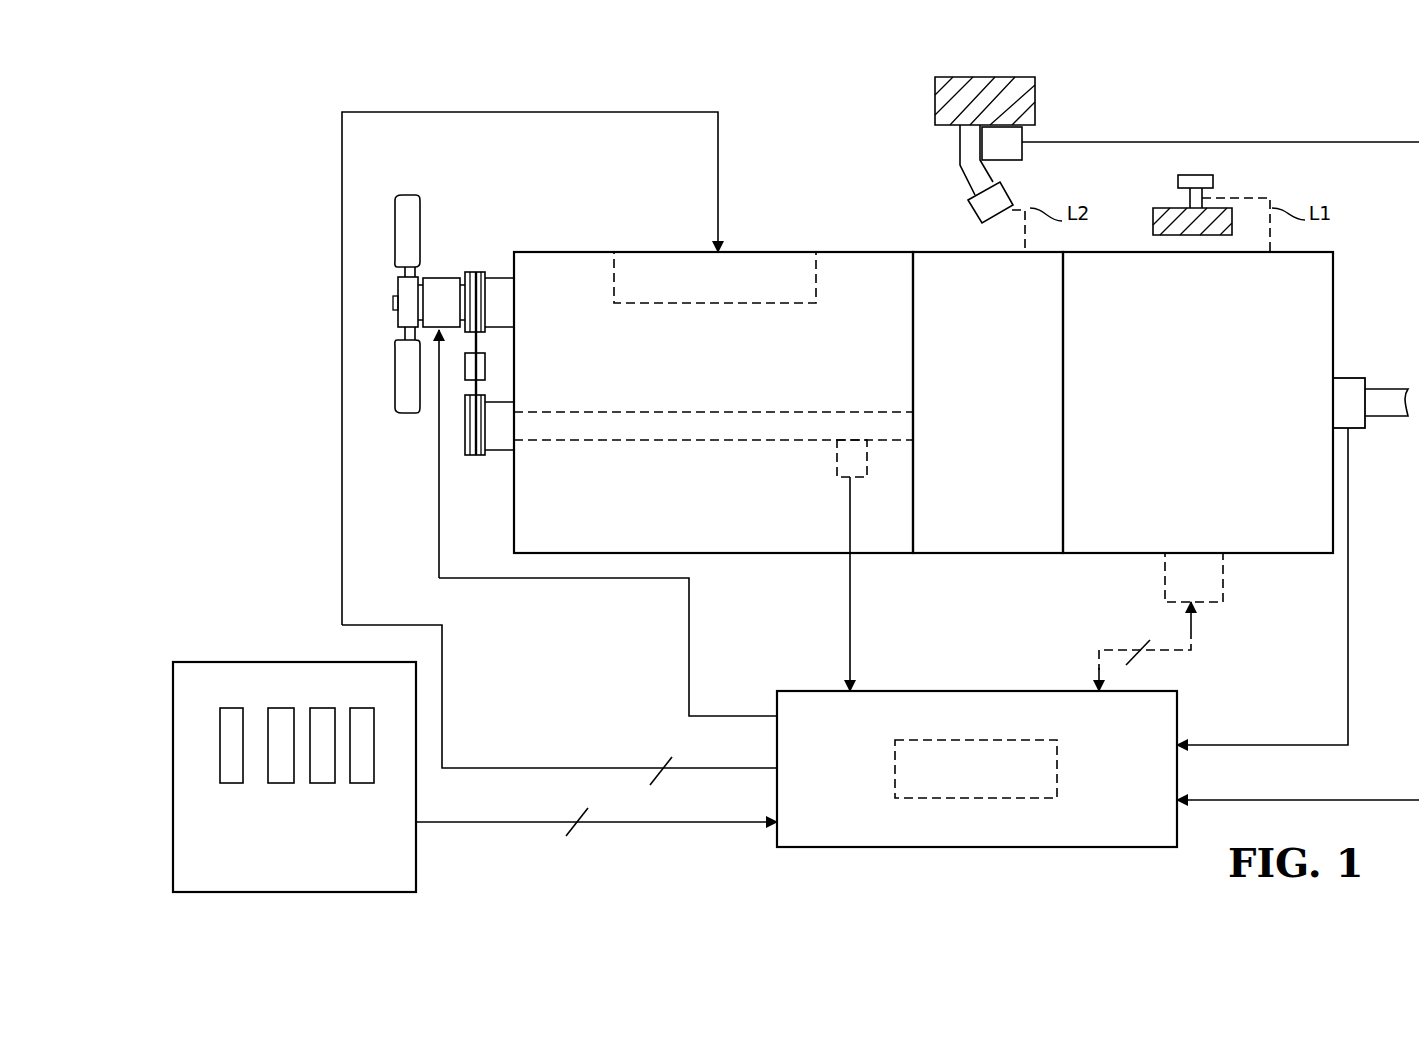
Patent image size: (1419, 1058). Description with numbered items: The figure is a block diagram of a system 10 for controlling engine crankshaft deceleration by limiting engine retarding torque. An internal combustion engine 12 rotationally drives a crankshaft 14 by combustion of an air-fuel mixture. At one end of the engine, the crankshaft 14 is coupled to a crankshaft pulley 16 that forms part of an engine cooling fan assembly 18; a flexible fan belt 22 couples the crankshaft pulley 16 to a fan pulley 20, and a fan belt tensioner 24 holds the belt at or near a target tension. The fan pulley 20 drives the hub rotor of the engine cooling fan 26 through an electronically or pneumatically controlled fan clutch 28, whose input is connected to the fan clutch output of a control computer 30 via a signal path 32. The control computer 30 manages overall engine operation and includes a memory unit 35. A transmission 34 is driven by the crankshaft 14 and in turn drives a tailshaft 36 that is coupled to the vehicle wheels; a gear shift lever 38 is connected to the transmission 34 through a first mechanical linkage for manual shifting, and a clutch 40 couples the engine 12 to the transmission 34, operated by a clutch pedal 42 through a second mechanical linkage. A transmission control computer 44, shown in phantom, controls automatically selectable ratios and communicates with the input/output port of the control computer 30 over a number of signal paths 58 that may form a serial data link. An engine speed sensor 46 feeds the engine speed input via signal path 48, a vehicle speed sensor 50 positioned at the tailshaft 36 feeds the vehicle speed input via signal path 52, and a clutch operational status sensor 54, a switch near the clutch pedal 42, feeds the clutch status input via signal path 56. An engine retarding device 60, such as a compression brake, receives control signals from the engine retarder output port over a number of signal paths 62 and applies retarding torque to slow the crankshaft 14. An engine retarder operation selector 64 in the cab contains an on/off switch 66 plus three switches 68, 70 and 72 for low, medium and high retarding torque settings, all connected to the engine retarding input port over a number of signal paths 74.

The system 10 is at (1302, 118).
The internal combustion engine 12 is at (760, 553).
The crankshaft 14 is at (680, 412).
The crankshaft pulley 16 is at (470, 455).
The engine cooling fan assembly 18 is at (420, 428).
The fan pulley 20 is at (478, 272).
The fan belt 22 is at (478, 347).
The fan belt tensioner 24 is at (486, 367).
The engine cooling fan 26 is at (412, 195).
The fan clutch 28 is at (440, 278).
The control computer 30 is at (1020, 691).
The signal path 32 is at (689, 660).
The transmission 34 is at (1112, 553).
The memory unit 35 is at (1057, 762).
The tailshaft 36 is at (1382, 416).
The gear shift lever 38 is at (1213, 181).
The clutch 40 is at (1003, 553).
The clutch pedal 42 is at (966, 210).
The transmission control computer 44 is at (1223, 578).
The engine speed sensor 46 is at (840, 477).
The signal path 48 is at (850, 612).
The vehicle speed sensor 50 is at (1350, 378).
The signal path 52 is at (1348, 610).
The clutch operational status sensor 54 is at (1022, 150).
The signal path 56 is at (1136, 142).
The signal paths 58 is at (1193, 636).
The engine retarding device 60 is at (775, 303).
The signal paths 62 is at (442, 678).
The engine retarder operation selector 64 is at (416, 855).
The on/off switch 66 is at (220, 728).
The switch 68 is at (272, 708).
The switch 70 is at (312, 708).
The switch 72 is at (374, 758).
The signal paths 74 is at (622, 822).